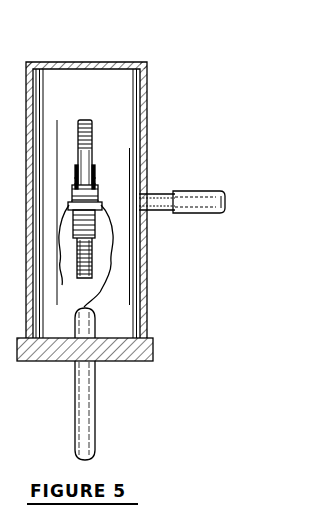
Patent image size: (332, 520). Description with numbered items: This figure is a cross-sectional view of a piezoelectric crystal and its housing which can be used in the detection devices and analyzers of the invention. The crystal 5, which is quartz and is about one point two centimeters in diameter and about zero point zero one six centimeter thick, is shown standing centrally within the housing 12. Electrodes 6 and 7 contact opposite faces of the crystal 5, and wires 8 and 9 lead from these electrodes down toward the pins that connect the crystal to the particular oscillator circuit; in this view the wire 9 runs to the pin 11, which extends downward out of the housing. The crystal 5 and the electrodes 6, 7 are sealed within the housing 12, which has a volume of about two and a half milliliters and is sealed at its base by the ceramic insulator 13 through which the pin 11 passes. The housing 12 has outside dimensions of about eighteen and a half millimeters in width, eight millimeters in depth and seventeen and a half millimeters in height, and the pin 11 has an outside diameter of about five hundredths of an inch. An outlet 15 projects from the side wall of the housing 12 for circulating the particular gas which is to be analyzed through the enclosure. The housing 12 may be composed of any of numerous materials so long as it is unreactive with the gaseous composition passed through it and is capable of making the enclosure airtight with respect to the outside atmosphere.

The crystal 5 is at (93, 127).
The electrode 6 is at (76, 188).
The electrode 7 is at (95, 188).
The wire 8 is at (65, 256).
The wire 9 is at (101, 256).
The pin 11 is at (95, 404).
The housing 12 is at (100, 62).
The ceramic insulator 13 is at (153, 349).
The outlet 15 is at (193, 192).